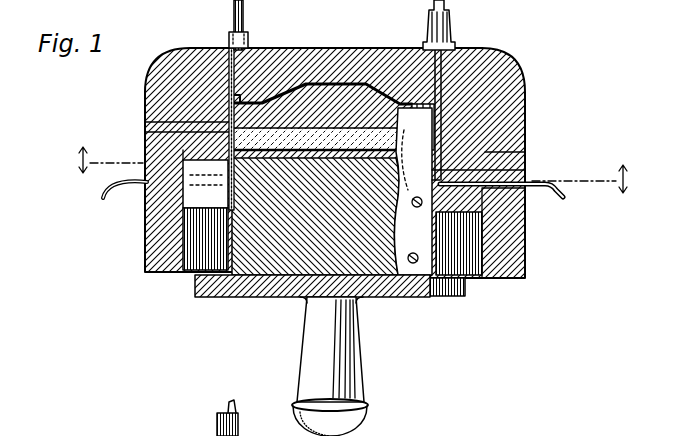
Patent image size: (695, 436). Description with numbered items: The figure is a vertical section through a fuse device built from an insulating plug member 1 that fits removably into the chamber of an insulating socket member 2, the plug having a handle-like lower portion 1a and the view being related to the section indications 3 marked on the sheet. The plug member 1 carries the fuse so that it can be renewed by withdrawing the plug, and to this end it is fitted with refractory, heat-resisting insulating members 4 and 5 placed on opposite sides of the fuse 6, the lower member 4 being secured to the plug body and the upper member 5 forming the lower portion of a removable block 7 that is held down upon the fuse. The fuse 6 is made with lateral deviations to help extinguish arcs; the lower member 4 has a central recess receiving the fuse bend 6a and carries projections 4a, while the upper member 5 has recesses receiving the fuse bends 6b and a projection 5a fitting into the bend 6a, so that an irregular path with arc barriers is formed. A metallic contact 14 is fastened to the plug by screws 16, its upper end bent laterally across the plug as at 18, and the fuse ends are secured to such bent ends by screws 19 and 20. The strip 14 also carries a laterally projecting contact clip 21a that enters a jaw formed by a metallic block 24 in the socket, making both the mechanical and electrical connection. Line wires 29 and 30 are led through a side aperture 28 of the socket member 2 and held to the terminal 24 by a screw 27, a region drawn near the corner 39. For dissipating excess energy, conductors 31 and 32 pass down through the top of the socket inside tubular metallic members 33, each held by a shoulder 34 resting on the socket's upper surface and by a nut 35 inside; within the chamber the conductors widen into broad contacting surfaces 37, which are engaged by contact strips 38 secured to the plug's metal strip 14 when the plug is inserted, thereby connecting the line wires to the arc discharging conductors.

The plug member 1 is at (283, 292).
The handle 1a is at (366, 386).
The socket member 2 is at (526, 88).
The section line 3- 3 is at (351, 170).
The lower damping member 4 is at (385, 258).
The projections 4a is at (272, 215).
The upper damping member 5 is at (487, 53).
The projection 5a is at (290, 230).
The fuse 6 is at (382, 102).
The fuse bend 6a is at (310, 244).
The fuse bends 6b is at (340, 100).
The removable block 7 is at (404, 104).
The metallic contact 14 is at (415, 263).
The screws 16 is at (526, 150).
The bent contact end 18 is at (258, 172).
The screw 19 is at (527, 50).
The screw 20 is at (230, 132).
The contact clip 21a is at (200, 195).
The metallic block 24 is at (526, 170).
The screw 27 is at (526, 243).
The side aperture 28 is at (470, 222).
The conductor 29 is at (564, 195).
The conductor 30 is at (104, 193).
The conductor 31 is at (452, 12).
The conductor 32 is at (233, 15).
The tubular metallic member 33 is at (245, 42).
The shoulder 34 is at (245, 46).
The nut 35 is at (298, 86).
The contacting surface 37 is at (230, 122).
The contact strip 38 is at (183, 150).
The casing corner 39 is at (518, 68).